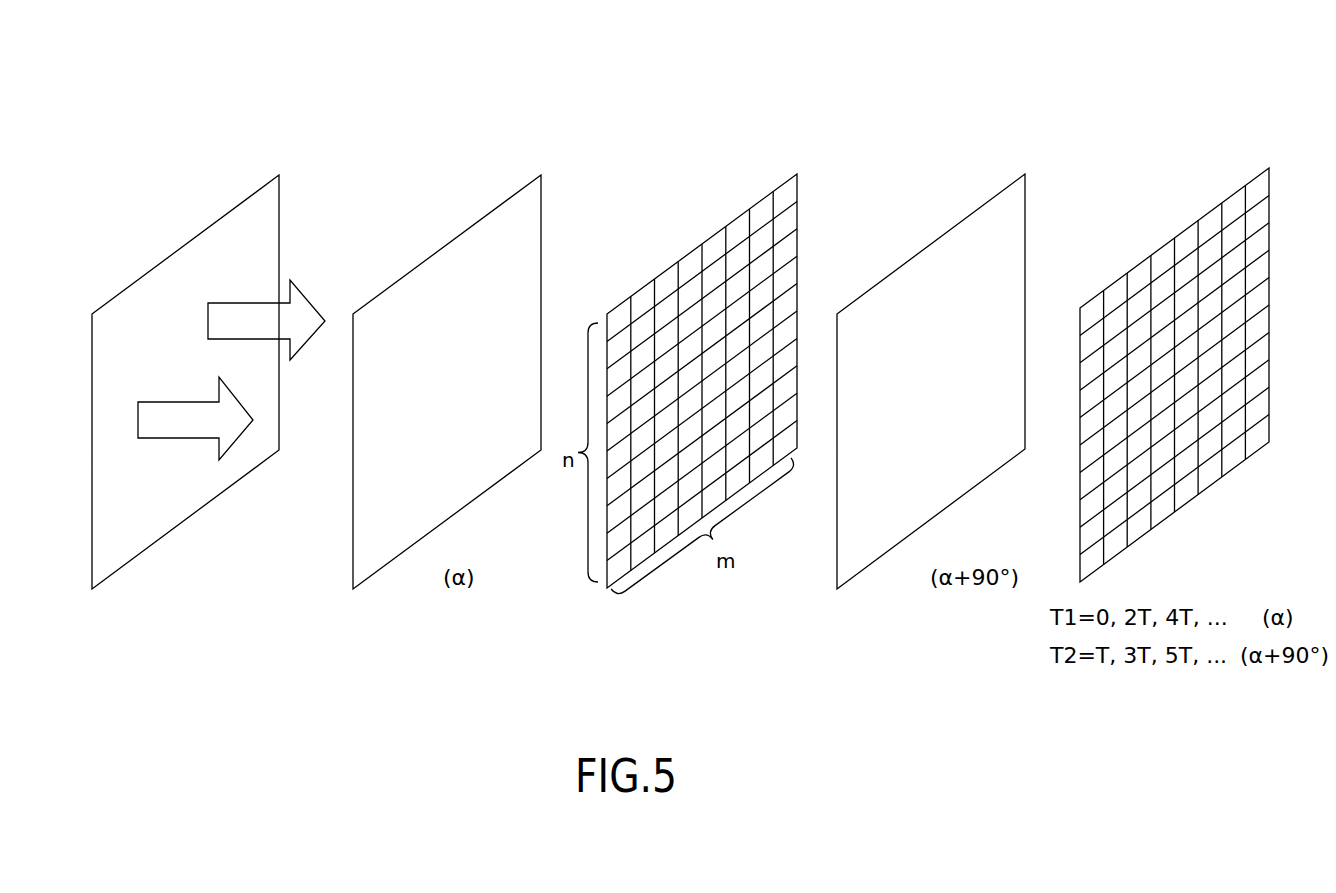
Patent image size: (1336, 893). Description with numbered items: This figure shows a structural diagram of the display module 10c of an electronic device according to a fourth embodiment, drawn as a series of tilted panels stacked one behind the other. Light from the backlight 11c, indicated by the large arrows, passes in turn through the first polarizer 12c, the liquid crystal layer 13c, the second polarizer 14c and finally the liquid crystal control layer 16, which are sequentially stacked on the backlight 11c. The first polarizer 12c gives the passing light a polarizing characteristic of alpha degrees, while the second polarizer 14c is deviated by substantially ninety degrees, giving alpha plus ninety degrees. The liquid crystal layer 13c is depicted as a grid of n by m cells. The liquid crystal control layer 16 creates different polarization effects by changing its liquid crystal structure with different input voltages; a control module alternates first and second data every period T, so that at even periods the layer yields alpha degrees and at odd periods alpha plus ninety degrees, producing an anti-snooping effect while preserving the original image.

The display module 10c is at (1243, 52).
The backlight 11c is at (210, 237).
The first polarizer 12c is at (482, 235).
The liquid crystal layer 13c is at (735, 225).
The second polarizer 14c is at (965, 227).
The liquid crystal control layer 16 is at (1178, 237).